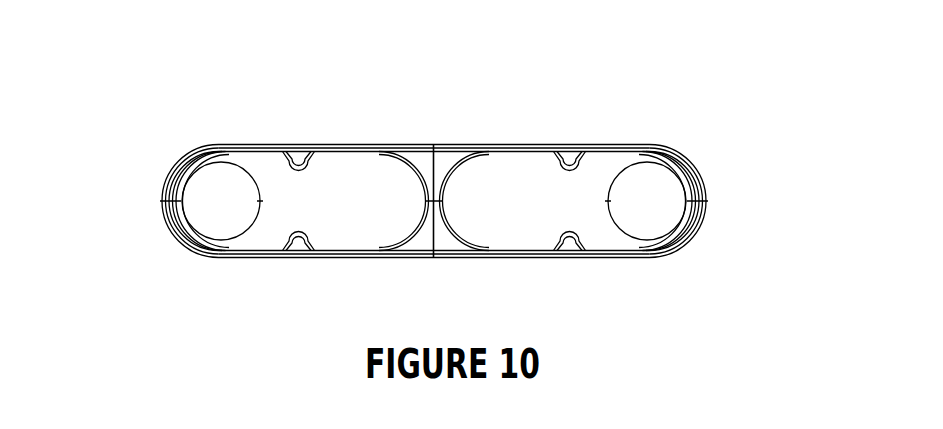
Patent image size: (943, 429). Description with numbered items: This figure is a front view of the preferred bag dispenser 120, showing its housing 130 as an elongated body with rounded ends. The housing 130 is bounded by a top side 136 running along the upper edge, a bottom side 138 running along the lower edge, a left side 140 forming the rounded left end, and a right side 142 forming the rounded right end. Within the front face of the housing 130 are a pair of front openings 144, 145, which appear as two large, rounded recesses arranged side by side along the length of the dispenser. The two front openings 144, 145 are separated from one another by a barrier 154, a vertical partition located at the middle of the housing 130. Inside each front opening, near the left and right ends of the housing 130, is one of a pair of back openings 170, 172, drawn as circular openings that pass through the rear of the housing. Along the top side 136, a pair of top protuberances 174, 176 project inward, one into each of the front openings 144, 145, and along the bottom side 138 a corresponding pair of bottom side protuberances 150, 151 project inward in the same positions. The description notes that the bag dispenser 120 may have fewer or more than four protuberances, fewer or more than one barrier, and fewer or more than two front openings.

The bag dispenser 120 is at (403, 128).
The housing 130 is at (666, 144).
The top side 136 is at (493, 143).
The bottom side 138 is at (635, 259).
The left side 140 is at (168, 202).
The right side 142 is at (702, 180).
The front opening 144 is at (265, 233).
The front opening 145 is at (605, 247).
The bottom side protuberance 150 is at (297, 245).
The bottom side protuberance 151 is at (572, 250).
The barrier 154 is at (427, 238).
The back opening 170 is at (207, 192).
The back opening 172 is at (638, 182).
The top protuberance 174 is at (300, 153).
The top protuberance 176 is at (572, 153).